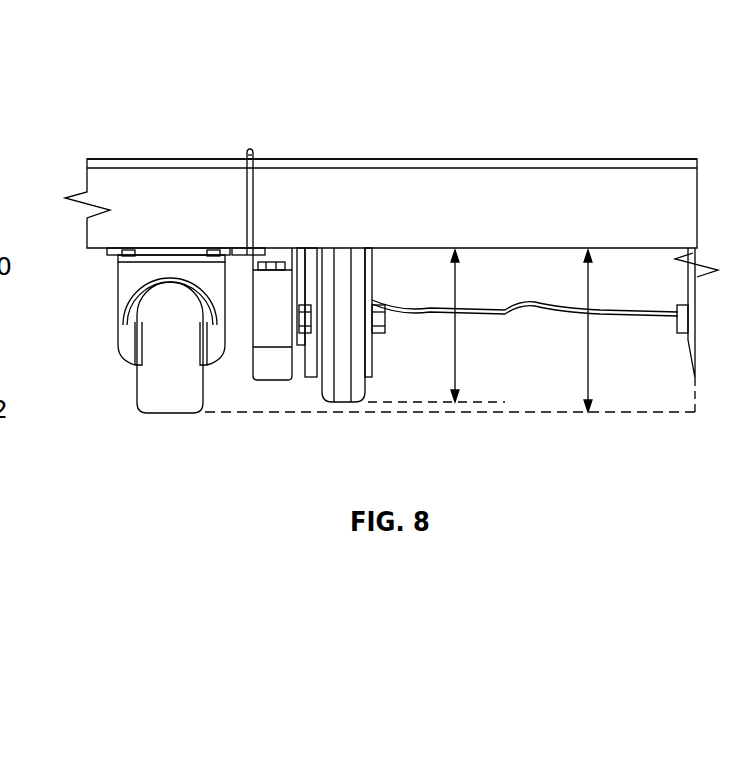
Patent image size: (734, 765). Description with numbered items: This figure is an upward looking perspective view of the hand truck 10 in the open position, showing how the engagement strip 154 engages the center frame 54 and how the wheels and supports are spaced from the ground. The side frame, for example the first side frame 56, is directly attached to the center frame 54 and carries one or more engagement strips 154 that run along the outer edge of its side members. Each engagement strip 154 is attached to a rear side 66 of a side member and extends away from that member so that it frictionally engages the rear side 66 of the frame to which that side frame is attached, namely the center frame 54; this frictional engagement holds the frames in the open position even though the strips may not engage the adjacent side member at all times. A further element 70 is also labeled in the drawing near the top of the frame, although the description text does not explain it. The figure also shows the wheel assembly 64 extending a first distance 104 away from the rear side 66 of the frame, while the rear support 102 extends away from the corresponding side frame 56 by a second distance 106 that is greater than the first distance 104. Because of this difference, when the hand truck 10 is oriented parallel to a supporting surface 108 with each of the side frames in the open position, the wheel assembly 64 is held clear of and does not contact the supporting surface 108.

The hand truck 10 is at (463, 108).
The center frame 54 is at (548, 148).
The first side frame 56 is at (218, 158).
The wheel assembly 64 is at (364, 382).
The rear side 66 is at (410, 248).
The pin 70 is at (250, 150).
The rear support 102 is at (118, 292).
The first distance 104 is at (457, 366).
The second distance 106 is at (592, 360).
The supporting surface 108 is at (308, 413).
The engagement strip 154 is at (233, 256).